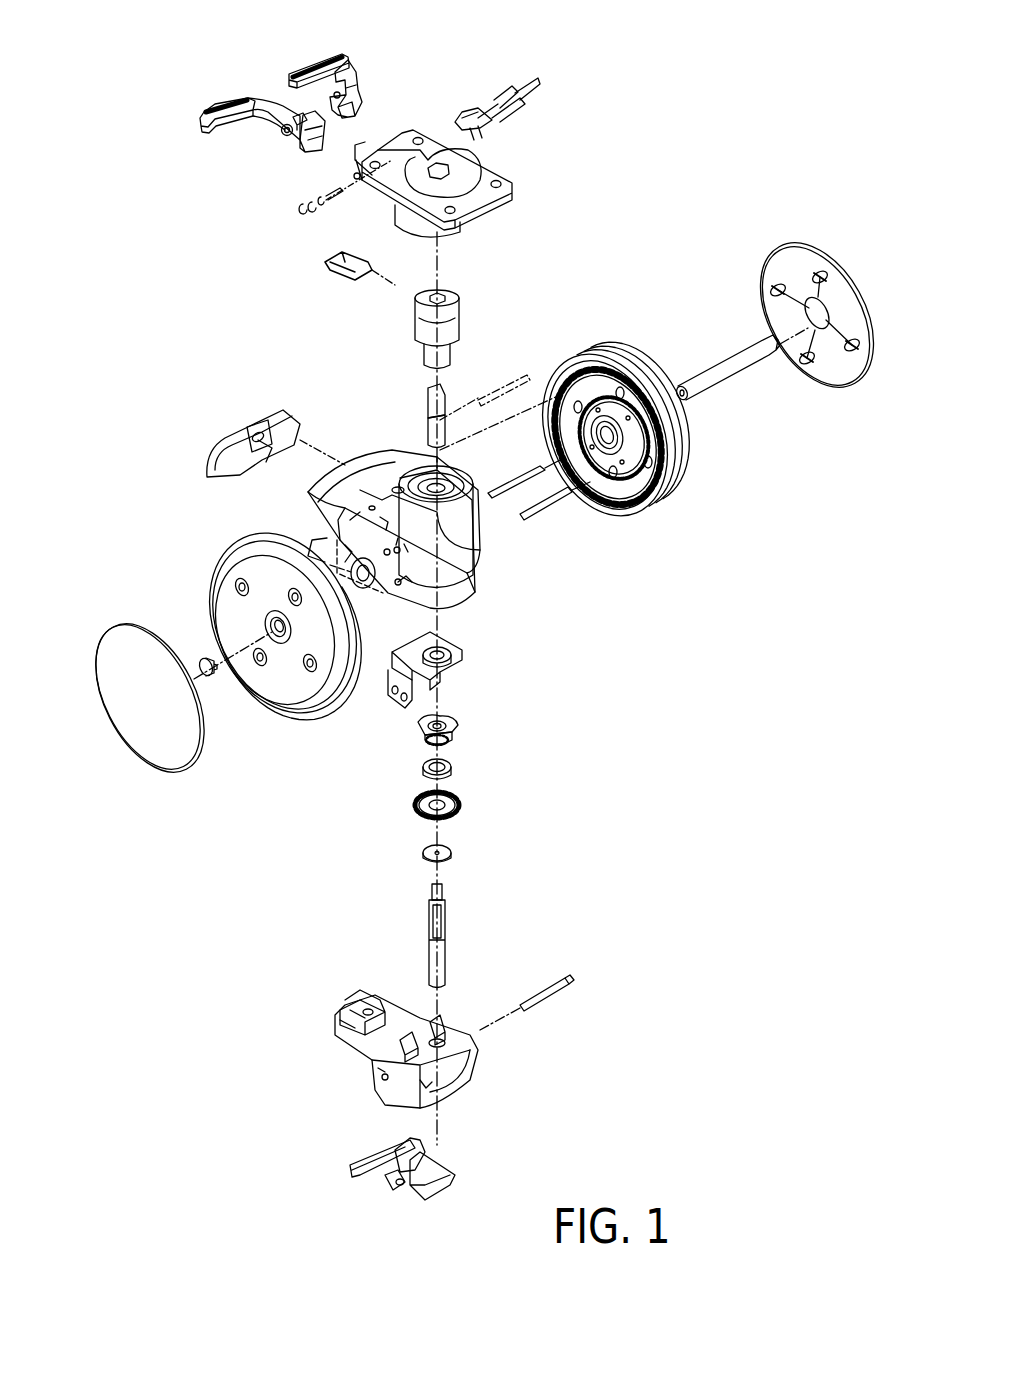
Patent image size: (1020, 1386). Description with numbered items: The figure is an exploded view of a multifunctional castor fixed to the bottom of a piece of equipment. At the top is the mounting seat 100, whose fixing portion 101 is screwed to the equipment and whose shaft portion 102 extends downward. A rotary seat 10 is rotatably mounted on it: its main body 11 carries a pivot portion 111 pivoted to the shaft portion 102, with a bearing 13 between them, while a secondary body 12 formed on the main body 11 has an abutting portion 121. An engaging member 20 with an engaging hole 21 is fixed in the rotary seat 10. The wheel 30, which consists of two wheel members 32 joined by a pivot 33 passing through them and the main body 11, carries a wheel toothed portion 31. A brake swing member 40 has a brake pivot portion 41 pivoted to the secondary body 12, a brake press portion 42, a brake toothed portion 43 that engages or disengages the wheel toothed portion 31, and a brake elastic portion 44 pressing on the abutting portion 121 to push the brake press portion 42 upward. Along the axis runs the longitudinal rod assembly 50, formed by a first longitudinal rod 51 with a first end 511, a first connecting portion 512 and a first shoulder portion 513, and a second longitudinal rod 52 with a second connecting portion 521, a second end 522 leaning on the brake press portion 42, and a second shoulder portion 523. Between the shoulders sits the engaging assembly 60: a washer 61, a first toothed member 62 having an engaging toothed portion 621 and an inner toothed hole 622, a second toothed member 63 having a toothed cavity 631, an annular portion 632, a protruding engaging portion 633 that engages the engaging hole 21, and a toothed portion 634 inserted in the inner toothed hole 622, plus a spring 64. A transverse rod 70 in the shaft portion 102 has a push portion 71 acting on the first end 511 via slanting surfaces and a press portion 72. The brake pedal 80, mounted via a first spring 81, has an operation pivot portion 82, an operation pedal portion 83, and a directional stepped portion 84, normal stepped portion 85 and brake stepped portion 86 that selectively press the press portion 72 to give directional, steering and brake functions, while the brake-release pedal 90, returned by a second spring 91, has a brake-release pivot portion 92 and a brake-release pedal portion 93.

The rotary seat 10 is at (323, 515).
The main body 11 is at (492, 548).
The secondary body 12 is at (481, 1078).
The bearing 13 is at (400, 455).
The engaging member 20 is at (460, 637).
The engaging hole 21 is at (426, 650).
The wheel 30 is at (692, 503).
The wheel toothed portion 31 is at (620, 470).
The wheel members 32 is at (620, 362).
The pivot 33 is at (724, 368).
The brake swing member 40 is at (433, 1153).
The brake pivot portion 41 is at (396, 1187).
The brake press portion 42 is at (446, 1182).
The brake toothed portion 43 is at (366, 1165).
The brake elastic portion 44 is at (416, 1150).
The longitudinal rod assembly 50 is at (426, 912).
The first longitudinal rod 51 is at (448, 392).
The second longitudinal rod 52 is at (441, 932).
The engaging assembly 60 is at (458, 800).
The washer 61 is at (451, 850).
The first toothed member 62 is at (461, 806).
The second toothed member 63 is at (423, 728).
The spring 64 is at (421, 768).
The transverse rod 70 is at (343, 270).
The push portion 71 is at (362, 278).
The press portion 72 is at (322, 258).
The brake pedal 80 is at (223, 104).
The first spring 81 is at (455, 117).
The operation pivot portion 82 is at (282, 130).
The operation pedal portion 83 is at (196, 113).
The directional stepped portion 84 is at (301, 140).
The normal stepped portion 85 is at (342, 130).
The brake stepped portion 86 is at (322, 152).
The brake-release pedal 90 is at (362, 72).
The second spring 91 is at (478, 112).
The brake-release pivot portion 92 is at (303, 90).
The brake-release pedal portion 93 is at (332, 56).
The mounting seat 100 is at (499, 158).
The fixing portion 101 is at (522, 170).
The shaft portion 102 is at (455, 315).
The pivot portion 111 is at (462, 472).
The abutting portion 121 is at (386, 1110).
The first end 511 is at (430, 395).
The first connecting portion 512 is at (458, 440).
The first shoulder portion 513 is at (415, 440).
The second connecting portion 521 is at (432, 893).
The second end 522 is at (446, 985).
The second shoulder portion 523 is at (441, 902).
The engaging toothed portion 621 is at (416, 805).
The inner toothed hole 622 is at (423, 828).
The toothed cavity 631 is at (440, 718).
The annular portion 632 is at (450, 722).
The protruding engaging portion 633 is at (455, 730).
The toothed portion 634 is at (420, 735).